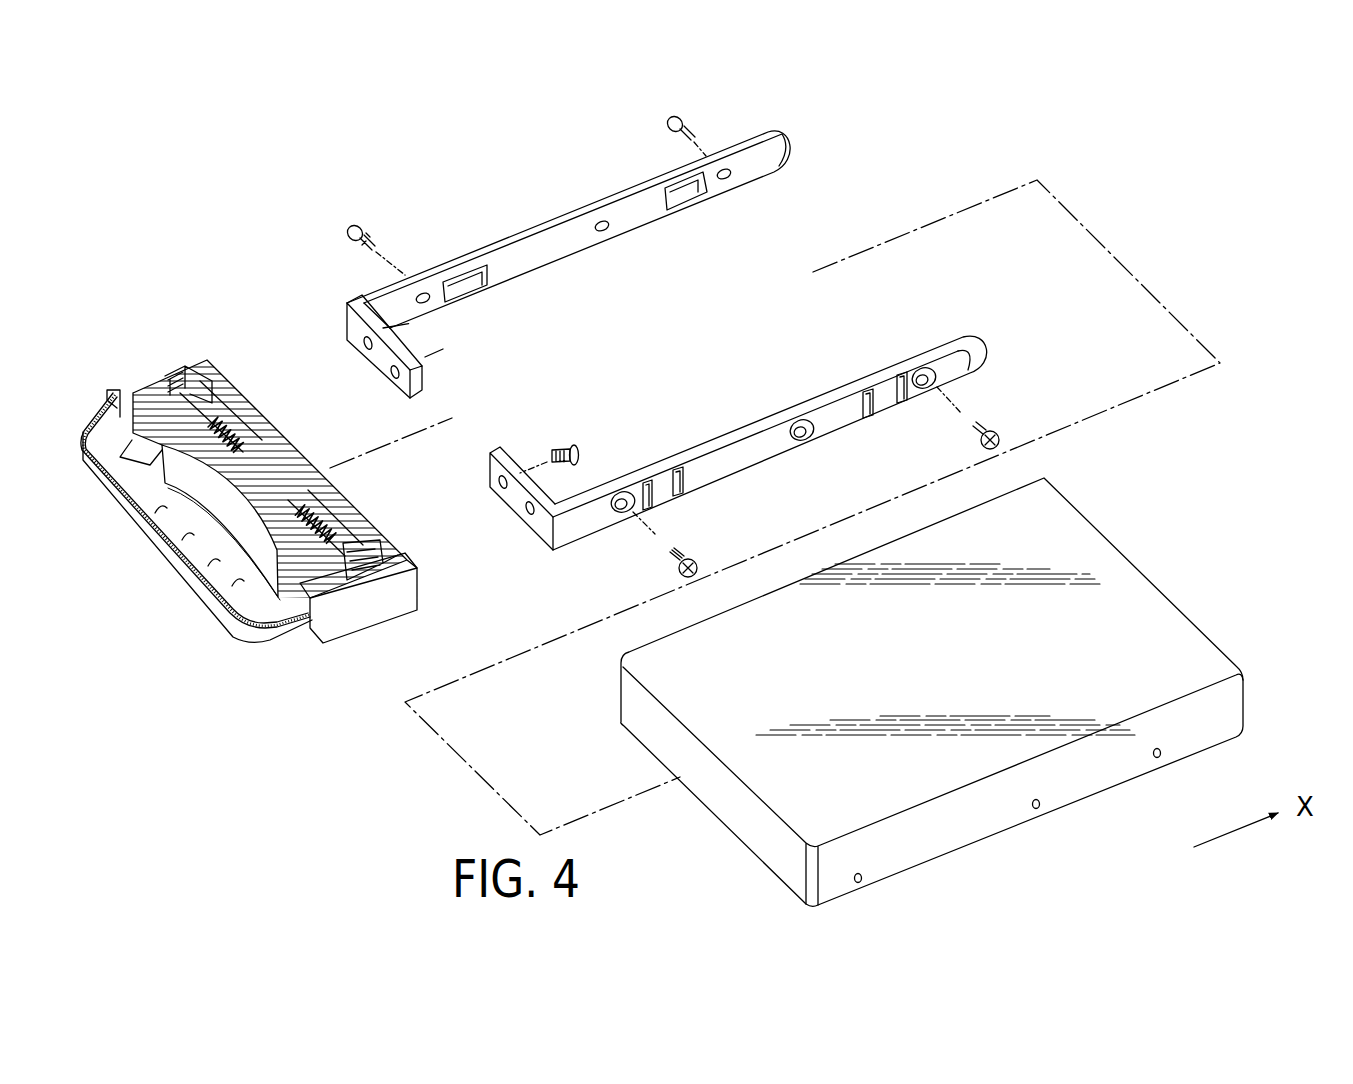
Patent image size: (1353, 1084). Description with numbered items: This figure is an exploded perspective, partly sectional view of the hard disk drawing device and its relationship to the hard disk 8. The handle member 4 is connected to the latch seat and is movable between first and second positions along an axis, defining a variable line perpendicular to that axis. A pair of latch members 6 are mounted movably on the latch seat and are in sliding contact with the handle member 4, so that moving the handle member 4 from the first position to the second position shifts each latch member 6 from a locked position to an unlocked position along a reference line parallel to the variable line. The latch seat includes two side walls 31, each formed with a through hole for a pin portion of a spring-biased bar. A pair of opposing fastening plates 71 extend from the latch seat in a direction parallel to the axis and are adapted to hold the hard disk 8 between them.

The fastening plate 71 is at (550, 207).
The hard disk 8 is at (1103, 797).
The handle member 4 is at (160, 569).
The latch member 6 is at (250, 426).
The side wall 31 is at (338, 655).